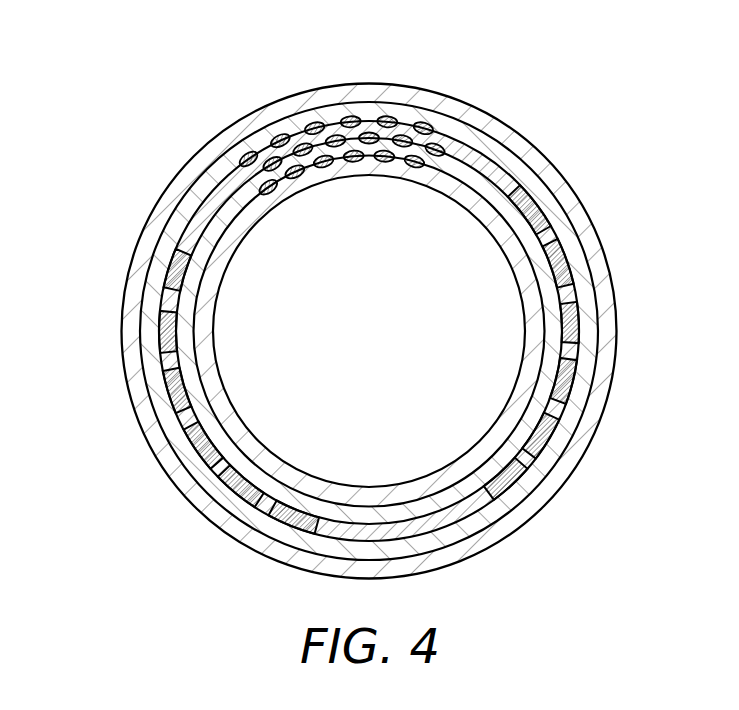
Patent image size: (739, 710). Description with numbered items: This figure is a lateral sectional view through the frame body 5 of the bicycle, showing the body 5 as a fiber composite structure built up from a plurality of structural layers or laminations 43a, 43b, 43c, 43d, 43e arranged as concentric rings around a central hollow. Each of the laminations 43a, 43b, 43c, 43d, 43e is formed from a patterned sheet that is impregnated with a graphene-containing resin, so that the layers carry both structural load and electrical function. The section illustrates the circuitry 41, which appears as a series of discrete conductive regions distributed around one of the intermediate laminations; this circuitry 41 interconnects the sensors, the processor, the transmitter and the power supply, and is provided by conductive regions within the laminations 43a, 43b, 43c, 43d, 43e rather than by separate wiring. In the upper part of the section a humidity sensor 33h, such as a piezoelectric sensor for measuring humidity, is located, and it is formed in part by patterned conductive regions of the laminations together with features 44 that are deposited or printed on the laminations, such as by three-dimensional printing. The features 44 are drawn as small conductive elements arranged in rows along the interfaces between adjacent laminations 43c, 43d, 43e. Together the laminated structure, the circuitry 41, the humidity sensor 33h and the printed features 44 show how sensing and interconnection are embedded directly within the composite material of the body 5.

The body 5 is at (102, 134).
The humidity sensor 33h is at (347, 123).
The features 44 is at (425, 122).
The structural layer 43a is at (548, 166).
The structural layer 43b is at (577, 258).
The circuitry 41 is at (166, 330).
The structural layer 43c is at (572, 350).
The structural layer 43d is at (527, 433).
The structural layer 43e is at (447, 480).